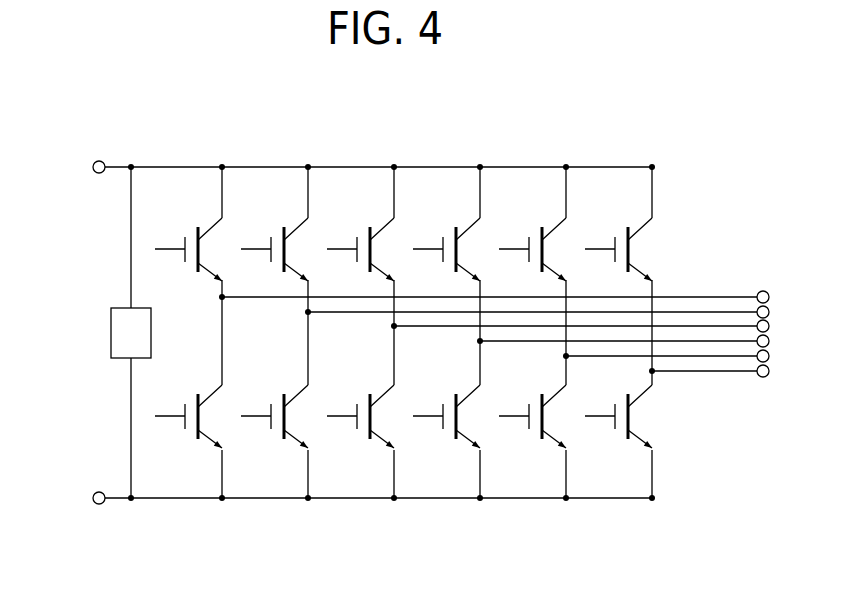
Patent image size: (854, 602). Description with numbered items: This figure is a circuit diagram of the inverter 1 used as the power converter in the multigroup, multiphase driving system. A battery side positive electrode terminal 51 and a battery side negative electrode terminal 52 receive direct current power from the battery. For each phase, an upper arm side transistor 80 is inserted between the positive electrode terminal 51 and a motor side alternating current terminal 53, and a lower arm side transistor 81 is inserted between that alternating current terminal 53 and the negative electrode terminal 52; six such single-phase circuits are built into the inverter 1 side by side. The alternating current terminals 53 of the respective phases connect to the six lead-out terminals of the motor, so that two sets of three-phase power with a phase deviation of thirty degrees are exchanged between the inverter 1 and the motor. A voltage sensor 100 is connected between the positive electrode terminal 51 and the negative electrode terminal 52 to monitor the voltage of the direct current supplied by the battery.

The inverter 1 is at (73, 73).
The positive electrode terminal 51 is at (99, 161).
The negative electrode terminal 52 is at (99, 504).
The alternating current terminal 53 is at (763, 291).
The upper arm side transistor 80 is at (197, 230).
The lower arm side transistor 81 is at (197, 436).
The voltage sensor 100 is at (111, 333).